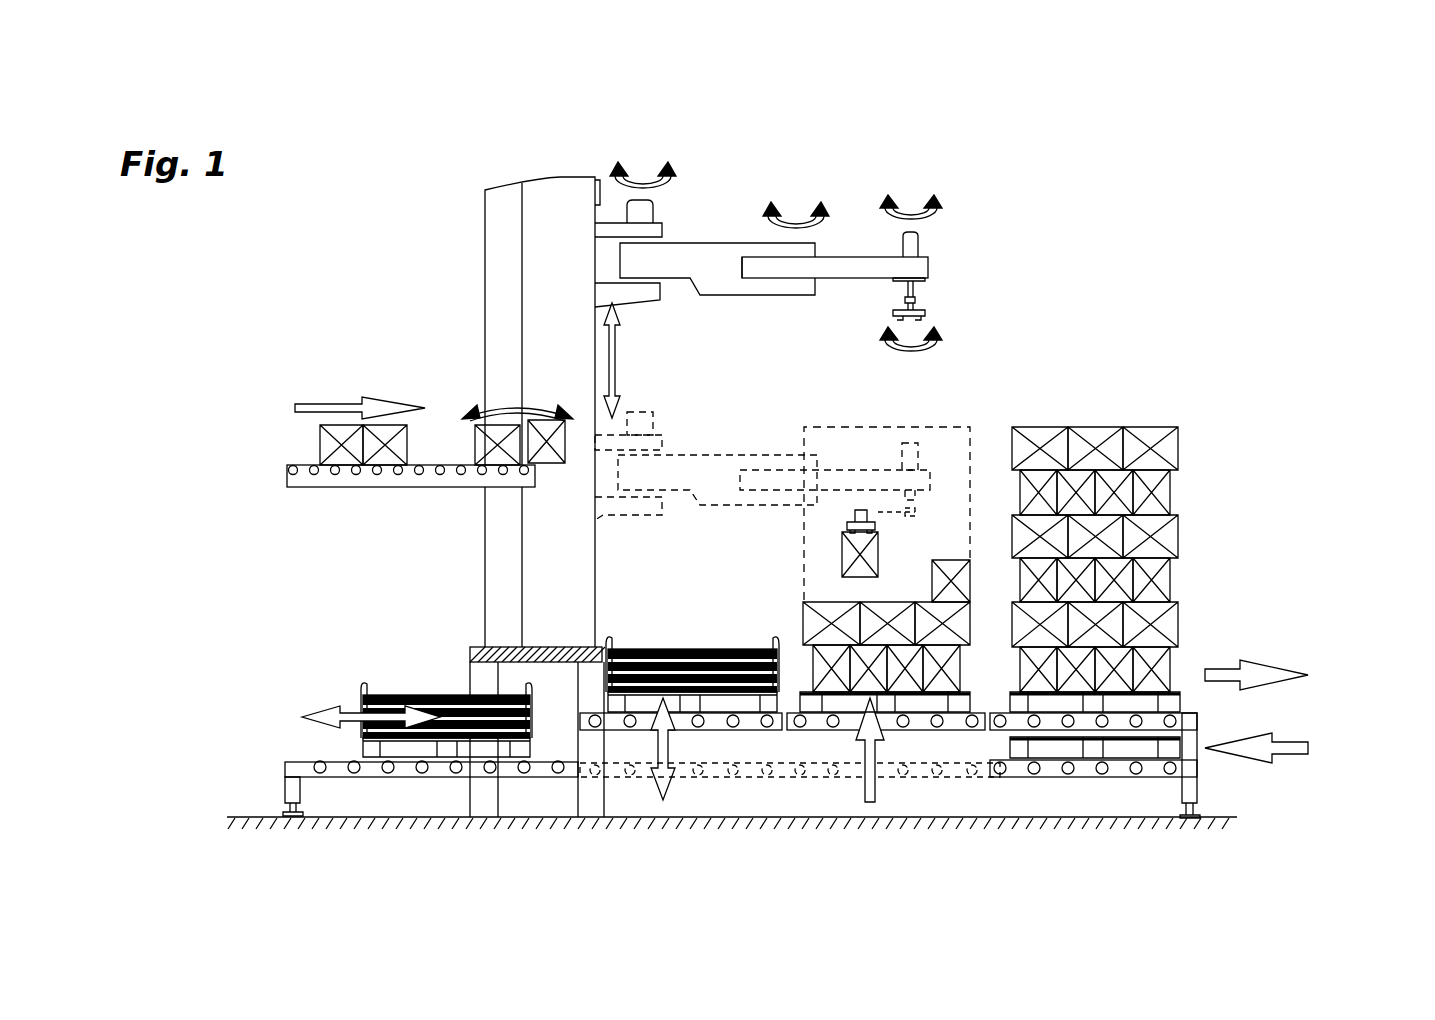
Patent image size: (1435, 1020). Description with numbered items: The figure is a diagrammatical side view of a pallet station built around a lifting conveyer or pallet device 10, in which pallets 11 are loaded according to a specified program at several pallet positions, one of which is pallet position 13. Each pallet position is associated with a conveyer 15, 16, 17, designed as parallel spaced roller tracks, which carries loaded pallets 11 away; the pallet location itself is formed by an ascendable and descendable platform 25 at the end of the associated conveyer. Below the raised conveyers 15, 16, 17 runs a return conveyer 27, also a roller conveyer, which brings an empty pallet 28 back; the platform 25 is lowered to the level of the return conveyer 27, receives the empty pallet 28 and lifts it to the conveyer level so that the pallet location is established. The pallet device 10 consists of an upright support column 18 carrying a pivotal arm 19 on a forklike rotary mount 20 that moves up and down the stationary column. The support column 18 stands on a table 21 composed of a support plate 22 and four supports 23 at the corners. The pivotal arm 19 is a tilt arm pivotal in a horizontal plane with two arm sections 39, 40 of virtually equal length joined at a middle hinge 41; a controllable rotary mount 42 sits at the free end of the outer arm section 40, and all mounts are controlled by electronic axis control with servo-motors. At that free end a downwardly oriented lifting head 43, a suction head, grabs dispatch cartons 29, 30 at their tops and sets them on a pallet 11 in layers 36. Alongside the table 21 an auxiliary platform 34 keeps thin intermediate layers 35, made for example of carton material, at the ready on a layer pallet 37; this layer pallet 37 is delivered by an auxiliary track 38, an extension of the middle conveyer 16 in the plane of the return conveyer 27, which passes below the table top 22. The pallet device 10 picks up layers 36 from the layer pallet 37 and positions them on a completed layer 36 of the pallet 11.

The pallet device 10 is at (700, 157).
The pallet 11 is at (1167, 702).
The pallet position 13 is at (992, 460).
The conveyer 15 is at (1204, 795).
The conveyer 16 is at (1204, 795).
The conveyer 17 is at (1223, 767).
The support column 18 is at (503, 345).
The pivotal arm 19 is at (857, 215).
The rotary mount 20 is at (678, 225).
The table 21 is at (433, 602).
The support plate 22 is at (470, 661).
The supports 23 is at (483, 797).
The platform 25 is at (953, 777).
The return conveyer 27 is at (818, 783).
The empty pallet 28 is at (1052, 753).
The carton 29 is at (807, 532).
The carton 30 is at (1165, 495).
The auxiliary platform 34 is at (713, 723).
The intermediate layers 35 is at (470, 692).
The layers 36 is at (1198, 538).
The layer pallet 37 is at (365, 748).
The auxiliary track 38 is at (347, 783).
The arm section 39 is at (717, 258).
The arm section 40 is at (862, 270).
The hinge 41 is at (788, 268).
The rotary mount 42 is at (912, 248).
The lifting head 43 is at (928, 323).